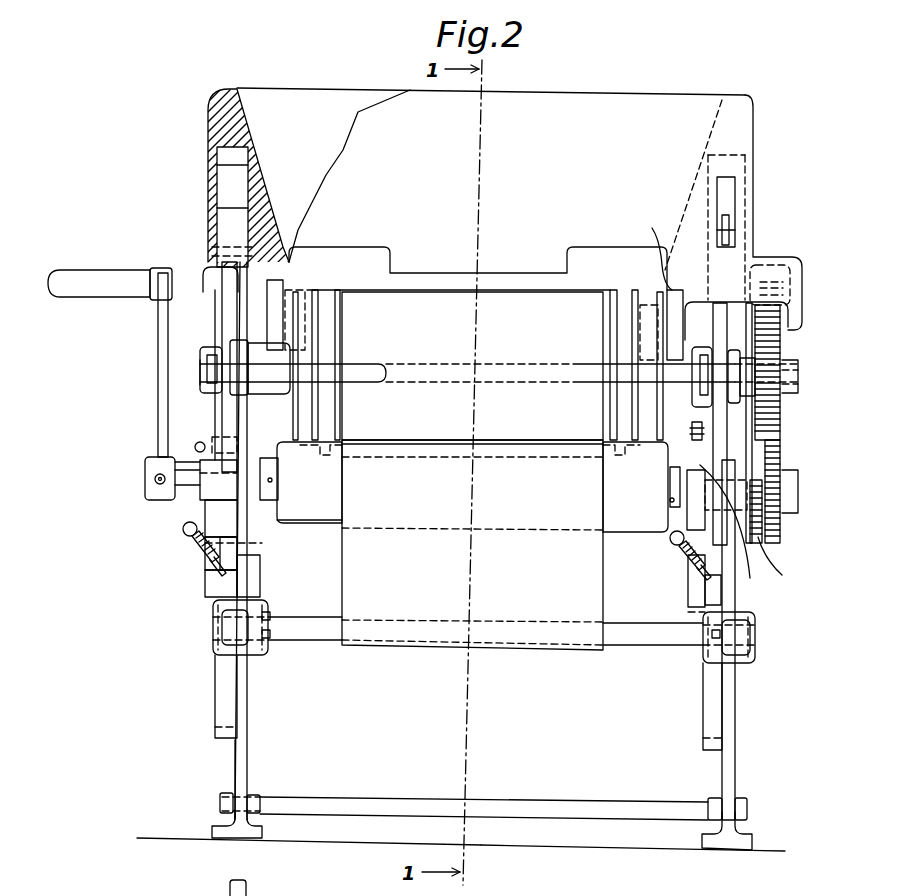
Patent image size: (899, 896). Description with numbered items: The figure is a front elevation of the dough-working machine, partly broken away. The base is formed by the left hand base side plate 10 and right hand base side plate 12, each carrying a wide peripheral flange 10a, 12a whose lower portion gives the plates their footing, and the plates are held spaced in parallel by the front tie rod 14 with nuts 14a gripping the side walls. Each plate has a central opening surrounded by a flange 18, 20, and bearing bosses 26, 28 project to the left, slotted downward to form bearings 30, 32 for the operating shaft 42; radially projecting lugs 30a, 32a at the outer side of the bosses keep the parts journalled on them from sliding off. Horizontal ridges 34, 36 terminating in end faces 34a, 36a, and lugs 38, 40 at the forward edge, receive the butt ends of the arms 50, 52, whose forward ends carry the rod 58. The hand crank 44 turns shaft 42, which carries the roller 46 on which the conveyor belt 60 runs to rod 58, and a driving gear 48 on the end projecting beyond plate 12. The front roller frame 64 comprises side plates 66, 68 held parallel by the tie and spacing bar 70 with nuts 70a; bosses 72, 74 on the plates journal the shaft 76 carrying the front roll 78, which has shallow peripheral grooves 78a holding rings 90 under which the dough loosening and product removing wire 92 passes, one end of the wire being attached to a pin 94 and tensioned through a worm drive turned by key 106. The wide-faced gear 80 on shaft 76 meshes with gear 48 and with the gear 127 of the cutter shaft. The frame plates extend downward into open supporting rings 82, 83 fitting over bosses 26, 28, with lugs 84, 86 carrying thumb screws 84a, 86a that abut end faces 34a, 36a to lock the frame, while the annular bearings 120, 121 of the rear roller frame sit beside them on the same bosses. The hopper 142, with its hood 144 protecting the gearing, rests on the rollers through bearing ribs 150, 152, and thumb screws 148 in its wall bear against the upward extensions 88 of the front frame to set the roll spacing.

The left hand base side plate 10 is at (235, 760).
The peripheral flange 10a is at (213, 827).
The right hand base side plate 12 is at (736, 770).
The peripheral flange 12a is at (746, 838).
The front tie rod 14 is at (380, 808).
The nuts 14a is at (250, 795).
The flange 18 is at (215, 718).
The flange 20 is at (703, 731).
The bearing boss 26 is at (205, 505).
The bearing boss 28 is at (655, 522).
The bearing 30 is at (258, 500).
The radially projecting lug 30a is at (205, 460).
The bearing 32 is at (726, 488).
The radially projecting lug 32a is at (698, 480).
The horizontal ridge 34 is at (240, 590).
The end face 34a is at (205, 584).
The horizontal ridge 36 is at (690, 598).
The end face 36a is at (720, 596).
The lug 38 is at (213, 628).
The lug 40 is at (755, 641).
The operating shaft 42 is at (145, 472).
The hand crank 44 is at (160, 338).
The roller 46 is at (326, 520).
The driving gear 48 is at (771, 544).
The arm 50 is at (268, 652).
The arm 52 is at (705, 663).
The rod 58 is at (642, 645).
The conveyor belt 60 is at (355, 580).
The front roller frame 64 is at (220, 318).
The side plate 66 is at (222, 410).
The side plate 68 is at (716, 442).
The tie and spacing bar 70 is at (276, 372).
The nuts 70a is at (215, 362).
The boss 72 is at (243, 345).
The boss 74 is at (742, 355).
The shaft 76 is at (200, 368).
The front roll 78 is at (392, 300).
The peripheral grooves 78a is at (318, 292).
The wide-faced gear 80 is at (775, 352).
The open supporting ring 82 is at (210, 465).
The open supporting ring 83 is at (731, 529).
The projecting lug 84 is at (205, 560).
The thumb screw 84a is at (183, 534).
The projecting lug 86 is at (690, 576).
The thumb screw 86a is at (675, 545).
The upward extension 88 is at (222, 222).
The rings 90 is at (340, 300).
The dough loosening and product removing wire 92 is at (262, 460).
The pin 94 is at (692, 425).
The key 106 is at (200, 442).
The annular bearing 120 is at (237, 560).
The annular bearing 121 is at (690, 612).
The gear 127 is at (782, 563).
The hopper 142 is at (208, 115).
The lateral extension or hood 144 is at (770, 262).
The thumb screws 148 is at (728, 222).
The hopper bearing rib 150 is at (212, 285).
The hopper bearing rib 152 is at (652, 228).